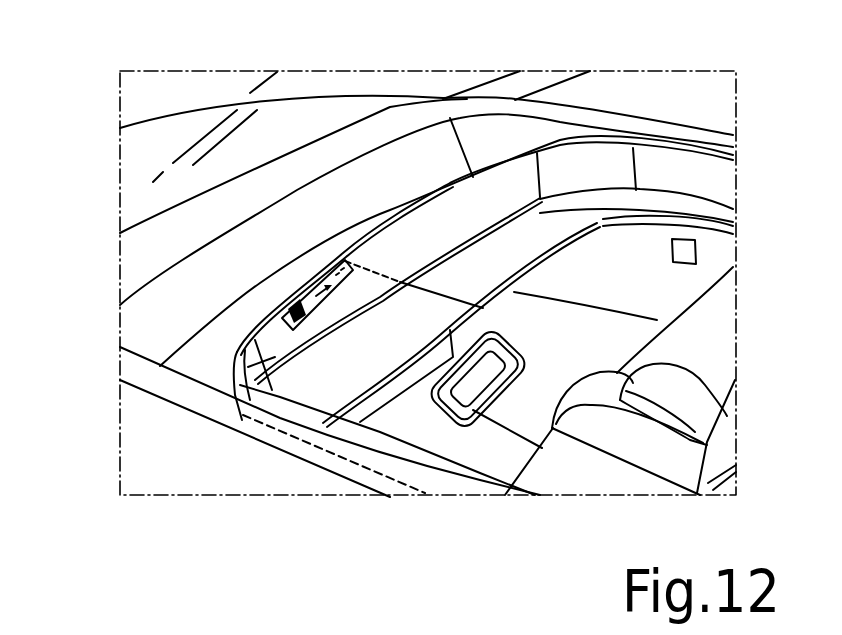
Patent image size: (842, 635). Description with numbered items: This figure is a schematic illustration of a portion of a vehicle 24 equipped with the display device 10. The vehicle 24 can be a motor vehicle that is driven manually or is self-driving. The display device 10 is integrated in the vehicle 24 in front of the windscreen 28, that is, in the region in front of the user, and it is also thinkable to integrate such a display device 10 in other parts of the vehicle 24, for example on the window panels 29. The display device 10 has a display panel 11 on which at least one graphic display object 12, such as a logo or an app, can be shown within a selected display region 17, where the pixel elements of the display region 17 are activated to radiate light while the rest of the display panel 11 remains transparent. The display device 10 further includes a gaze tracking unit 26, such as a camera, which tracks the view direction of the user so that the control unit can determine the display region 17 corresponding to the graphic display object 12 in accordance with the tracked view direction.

The display device 10 is at (250, 269).
The display panel 11 is at (238, 375).
The graphic display object 12 is at (232, 386).
The display region 17 is at (338, 311).
The vehicle 24 is at (400, 96).
The gaze tracking unit 26 is at (684, 252).
The windscreen 28 is at (198, 84).
The window panels 29 is at (643, 85).